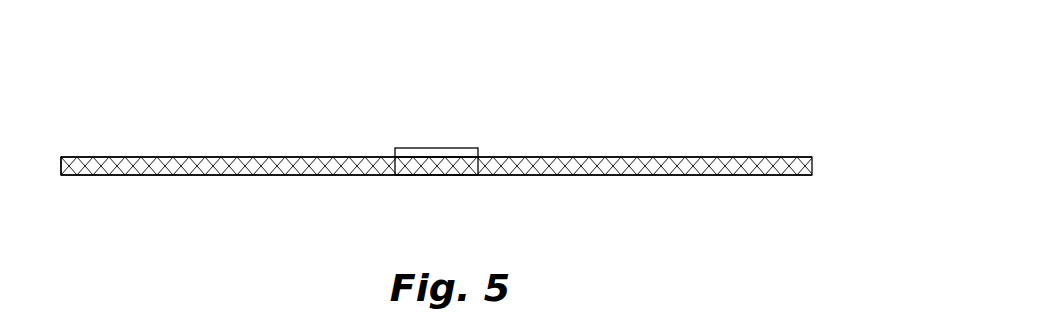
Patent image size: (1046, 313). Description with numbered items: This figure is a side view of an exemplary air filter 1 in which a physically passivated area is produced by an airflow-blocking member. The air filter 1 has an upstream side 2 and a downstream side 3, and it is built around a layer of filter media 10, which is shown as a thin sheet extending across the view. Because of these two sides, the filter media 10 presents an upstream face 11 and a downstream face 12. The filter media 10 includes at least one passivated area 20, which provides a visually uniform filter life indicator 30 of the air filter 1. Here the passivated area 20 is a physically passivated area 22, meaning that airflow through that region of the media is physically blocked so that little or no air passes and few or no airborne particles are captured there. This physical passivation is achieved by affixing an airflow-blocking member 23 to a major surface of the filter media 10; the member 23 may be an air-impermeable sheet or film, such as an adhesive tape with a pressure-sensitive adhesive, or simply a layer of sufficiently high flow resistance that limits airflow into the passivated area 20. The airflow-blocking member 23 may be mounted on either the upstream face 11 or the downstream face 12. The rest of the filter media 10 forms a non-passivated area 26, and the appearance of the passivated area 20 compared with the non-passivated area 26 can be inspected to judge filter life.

The air filter 1 is at (782, 48).
The upstream side 2 is at (615, 102).
The downstream side 3 is at (167, 190).
The filter media 10 is at (775, 158).
The upstream face 11 is at (731, 156).
The downstream face 12 is at (732, 176).
The passivated area 20 is at (465, 161).
The physically passivated area 22 is at (404, 167).
The airflow-blocking member 23 is at (448, 153).
The non-passivated area 26 is at (157, 155).
The visually uniform filter life indicator 30 is at (420, 161).